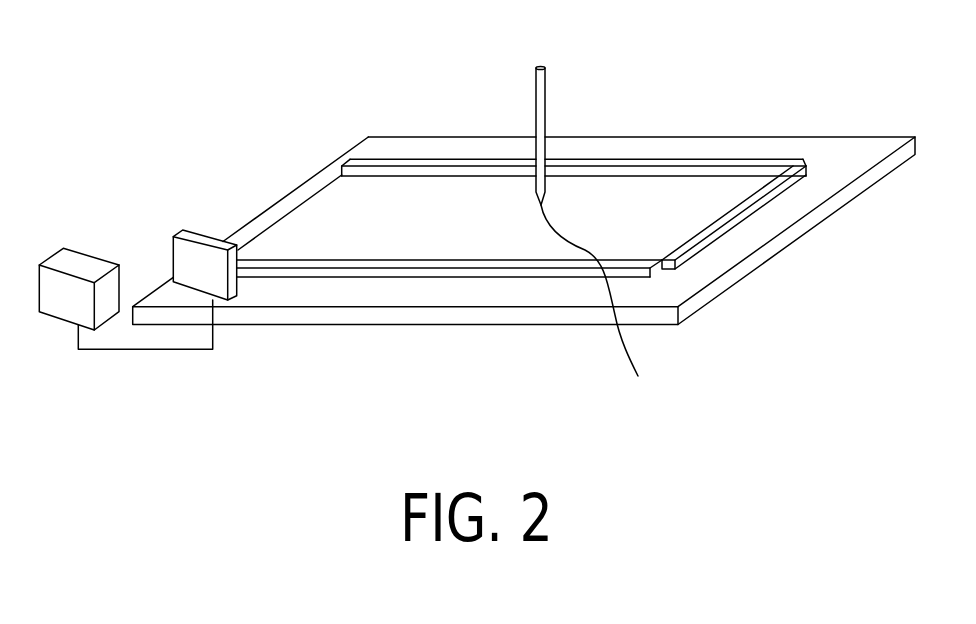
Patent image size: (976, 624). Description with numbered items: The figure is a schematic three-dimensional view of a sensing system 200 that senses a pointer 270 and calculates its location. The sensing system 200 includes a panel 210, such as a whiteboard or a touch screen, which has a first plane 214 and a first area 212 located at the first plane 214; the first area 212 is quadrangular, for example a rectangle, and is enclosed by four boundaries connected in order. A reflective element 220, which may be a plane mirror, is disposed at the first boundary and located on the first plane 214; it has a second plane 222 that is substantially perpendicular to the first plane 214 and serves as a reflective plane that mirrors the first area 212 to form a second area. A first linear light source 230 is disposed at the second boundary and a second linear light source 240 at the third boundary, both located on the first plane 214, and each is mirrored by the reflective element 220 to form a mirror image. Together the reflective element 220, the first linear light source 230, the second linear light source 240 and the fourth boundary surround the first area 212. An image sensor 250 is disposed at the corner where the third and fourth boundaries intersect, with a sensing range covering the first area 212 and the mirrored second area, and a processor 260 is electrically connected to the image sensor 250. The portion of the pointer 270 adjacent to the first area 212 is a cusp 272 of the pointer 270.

The sensing system 200 is at (818, 373).
The panel 210 is at (762, 236).
The first area 212 is at (358, 218).
The first plane 214 is at (403, 293).
The reflective element 220 is at (705, 163).
The second plane 222 is at (641, 181).
The first linear light source 230 is at (782, 180).
The second linear light source 240 is at (533, 269).
The image sensor 250 is at (181, 230).
The processor 260 is at (63, 248).
The pointer 270 is at (540, 65).
The cusp 272 is at (603, 308).